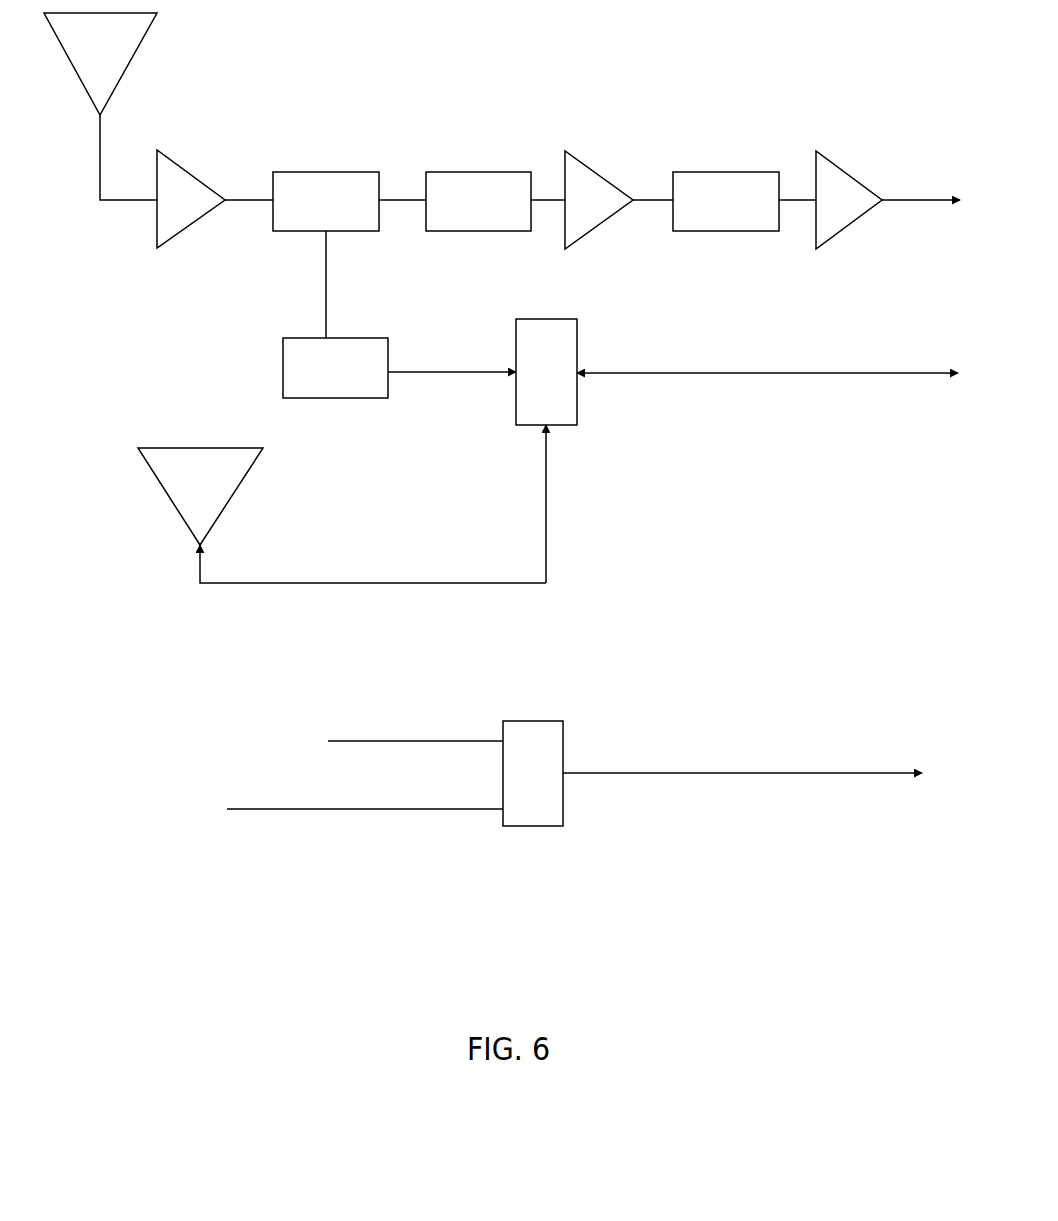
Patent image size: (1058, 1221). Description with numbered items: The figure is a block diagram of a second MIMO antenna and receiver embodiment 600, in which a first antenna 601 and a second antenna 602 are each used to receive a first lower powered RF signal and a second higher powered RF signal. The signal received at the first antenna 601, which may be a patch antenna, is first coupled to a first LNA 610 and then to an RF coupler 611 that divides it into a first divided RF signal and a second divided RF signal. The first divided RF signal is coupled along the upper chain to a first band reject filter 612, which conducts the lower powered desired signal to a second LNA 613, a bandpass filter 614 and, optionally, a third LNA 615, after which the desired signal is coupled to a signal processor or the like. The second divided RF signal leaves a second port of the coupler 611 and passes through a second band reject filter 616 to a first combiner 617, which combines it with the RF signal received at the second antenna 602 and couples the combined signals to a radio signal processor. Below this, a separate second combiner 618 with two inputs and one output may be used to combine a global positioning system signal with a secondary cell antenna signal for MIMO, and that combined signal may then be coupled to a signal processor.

The second MIMO antenna and receiver embodiment 600 is at (485, 143).
The first antenna 601 is at (100, 106).
The second antenna 602 is at (342, 515).
The first LNA 610 is at (215, 199).
The RF coupler 611 is at (349, 255).
The first band reject filter 612 is at (495, 201).
The second LNA 613 is at (619, 200).
The bandpass filter 614 is at (744, 201).
The third LNA 615 is at (888, 200).
The second band reject filter 616 is at (399, 368).
The first combiner 617 is at (737, 451).
The second combiner 618 is at (574, 773).